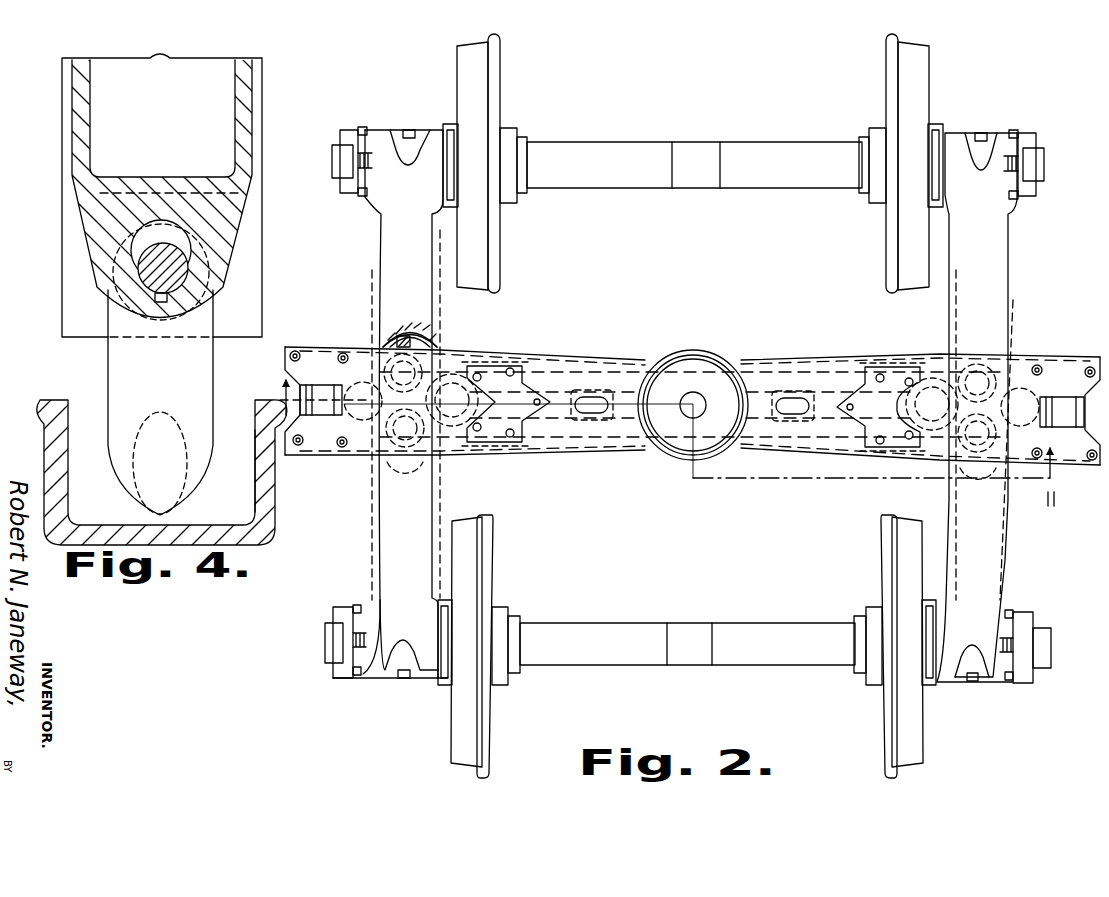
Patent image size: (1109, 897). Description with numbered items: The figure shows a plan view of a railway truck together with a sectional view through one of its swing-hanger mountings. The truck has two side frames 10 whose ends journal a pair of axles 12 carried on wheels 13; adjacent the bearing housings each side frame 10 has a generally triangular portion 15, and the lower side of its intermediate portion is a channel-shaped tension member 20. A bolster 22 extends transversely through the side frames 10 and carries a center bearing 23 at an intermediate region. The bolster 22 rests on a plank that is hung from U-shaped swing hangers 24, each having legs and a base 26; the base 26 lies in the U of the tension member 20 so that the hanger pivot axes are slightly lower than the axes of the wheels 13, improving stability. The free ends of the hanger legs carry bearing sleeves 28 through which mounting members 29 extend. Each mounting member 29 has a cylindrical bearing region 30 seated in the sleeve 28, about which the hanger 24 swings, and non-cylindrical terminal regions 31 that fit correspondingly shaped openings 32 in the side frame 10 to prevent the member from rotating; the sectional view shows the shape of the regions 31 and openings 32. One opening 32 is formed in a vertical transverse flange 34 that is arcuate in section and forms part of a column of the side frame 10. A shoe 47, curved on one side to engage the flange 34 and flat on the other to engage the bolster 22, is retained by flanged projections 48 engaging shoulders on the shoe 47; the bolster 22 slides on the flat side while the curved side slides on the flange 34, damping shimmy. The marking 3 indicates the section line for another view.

In FIG. 2, the side frame 10 is at (383, 560).
In FIG. 2, the axle 12 is at (612, 183).
In FIG. 2, the wheel 13 is at (495, 268).
In FIG. 4, the triangular portion 15 is at (266, 500).
In FIG. 4, the channel-shaped lower side 20 is at (52, 438).
In FIG. 2, the bolster 22 is at (822, 352).
In FIG. 2, the center bearing 23 is at (722, 356).
In FIG. 4, the swing hanger 24 is at (106, 363).
In FIG. 4, the base 26 is at (170, 412).
In FIG. 4, the bearing sleeve 28 is at (177, 230).
In FIG. 4, the mounting member 29 is at (186, 248).
In FIG. 4, the bearing region 30 is at (200, 278).
In FIG. 4, the terminal region 31 is at (169, 246).
In FIG. 4, the opening 32 is at (147, 224).
In FIG. 2, the flange 34 is at (404, 324).
In FIG. 2, the shoe 47 is at (386, 334).
In FIG. 2, the flanged projection 48 is at (382, 320).
In FIG. 2, the section line 3- 3 is at (668, 425).